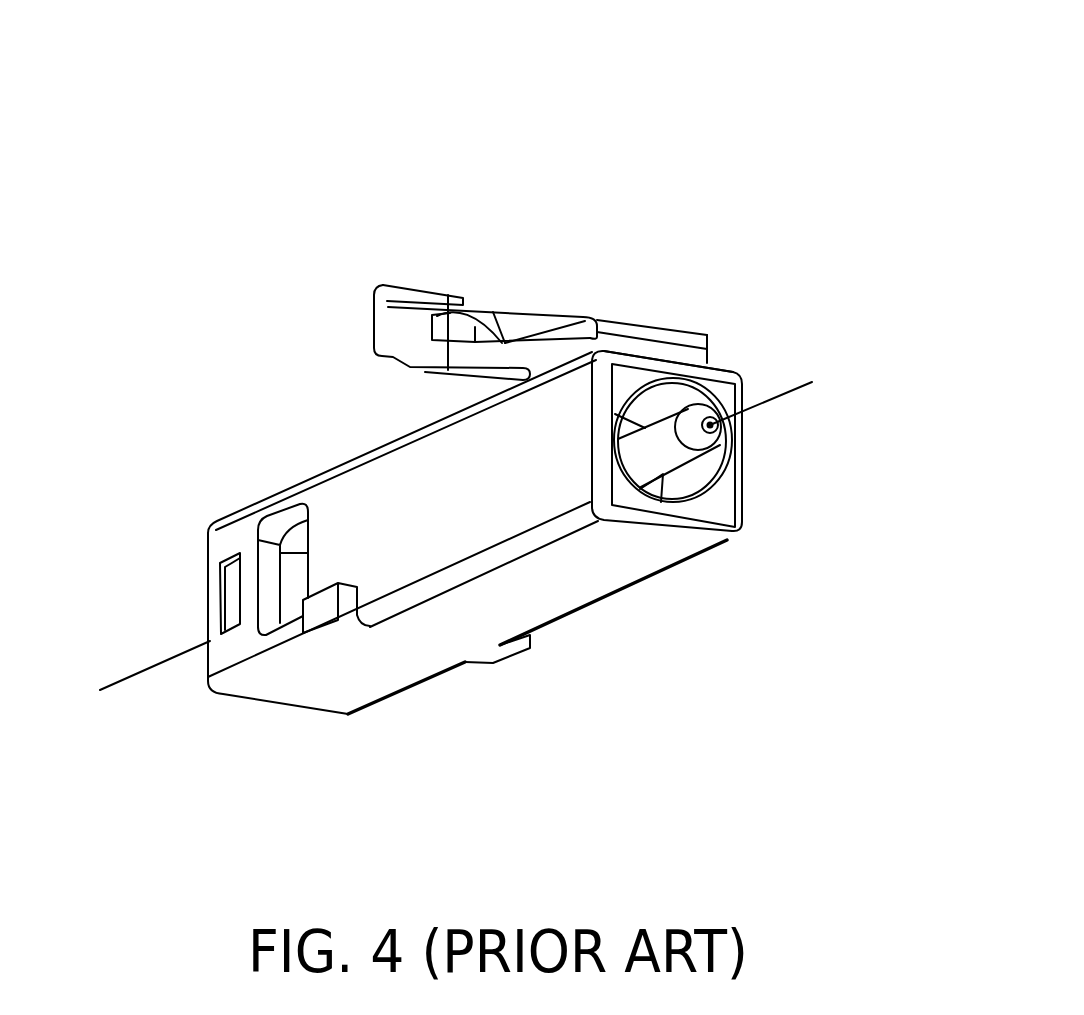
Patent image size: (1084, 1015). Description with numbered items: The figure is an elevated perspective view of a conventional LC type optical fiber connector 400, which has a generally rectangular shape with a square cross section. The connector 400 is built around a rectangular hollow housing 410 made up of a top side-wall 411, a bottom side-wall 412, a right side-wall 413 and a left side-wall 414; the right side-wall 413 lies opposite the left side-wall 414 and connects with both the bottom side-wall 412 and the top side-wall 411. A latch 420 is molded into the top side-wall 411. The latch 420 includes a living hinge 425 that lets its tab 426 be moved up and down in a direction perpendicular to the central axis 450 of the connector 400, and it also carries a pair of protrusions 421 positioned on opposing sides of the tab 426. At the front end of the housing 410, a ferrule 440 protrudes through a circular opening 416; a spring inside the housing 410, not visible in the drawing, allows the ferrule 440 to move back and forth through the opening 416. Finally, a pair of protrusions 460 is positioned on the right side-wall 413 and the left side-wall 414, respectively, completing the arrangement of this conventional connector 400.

The LC type optical fiber connector 400 is at (553, 100).
The housing 410 is at (580, 677).
The top side-wall 411 is at (697, 342).
The bottom side-wall 412 is at (627, 557).
The right side-wall 413 is at (745, 517).
The left side-wall 414 is at (430, 487).
The circular opening 416 is at (705, 473).
The latch 420 is at (420, 255).
The protrusions 421 is at (440, 327).
The living hinge 425 is at (645, 343).
The tab 426 is at (393, 333).
The ferrule 440 is at (675, 452).
The central axis 450 is at (778, 398).
The protrusions 460 is at (320, 603).